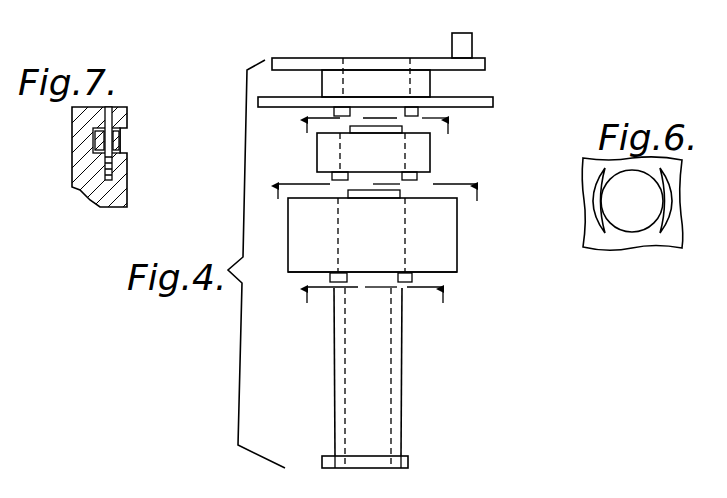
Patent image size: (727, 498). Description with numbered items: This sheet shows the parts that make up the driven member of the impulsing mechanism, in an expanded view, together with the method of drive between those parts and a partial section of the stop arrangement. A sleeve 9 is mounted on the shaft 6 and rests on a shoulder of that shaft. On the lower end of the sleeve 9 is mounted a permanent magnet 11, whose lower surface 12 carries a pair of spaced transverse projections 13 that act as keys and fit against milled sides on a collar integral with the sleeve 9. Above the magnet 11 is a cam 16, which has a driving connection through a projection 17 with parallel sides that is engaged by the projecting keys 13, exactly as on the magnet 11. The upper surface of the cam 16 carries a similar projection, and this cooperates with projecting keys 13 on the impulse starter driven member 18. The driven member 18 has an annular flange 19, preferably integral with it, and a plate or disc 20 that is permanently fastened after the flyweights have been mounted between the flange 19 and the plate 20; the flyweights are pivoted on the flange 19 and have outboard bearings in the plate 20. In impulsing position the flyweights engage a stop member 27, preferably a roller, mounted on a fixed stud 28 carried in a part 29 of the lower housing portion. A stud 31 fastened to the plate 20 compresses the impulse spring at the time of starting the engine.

In FIG. 4, the shaft 6 is at (376, 224).
In FIG. 4, the sleeve 9 is at (397, 408).
In FIG. 4, the permanent magnet 11 is at (302, 237).
In FIG. 4, the lower surface of the magnet 12 is at (302, 275).
In FIG. 4, the transverse projections 13 is at (418, 111).
In FIG. 4, the cam 16 is at (325, 152).
In FIG. 4, the projection 17 is at (383, 131).
In FIG. 4, the impulse starter driven member 18 is at (430, 85).
In FIG. 4, the annular flange 19 is at (490, 105).
In FIG. 4, the plate or disc 20 is at (485, 65).
In FIG. 7, the stop member 27 is at (122, 138).
In FIG. 7, the fixed stud 28 is at (110, 118).
In FIG. 7, the part of the lower housing portion 29 is at (78, 163).
In FIG. 4, the stud 31 is at (463, 42).